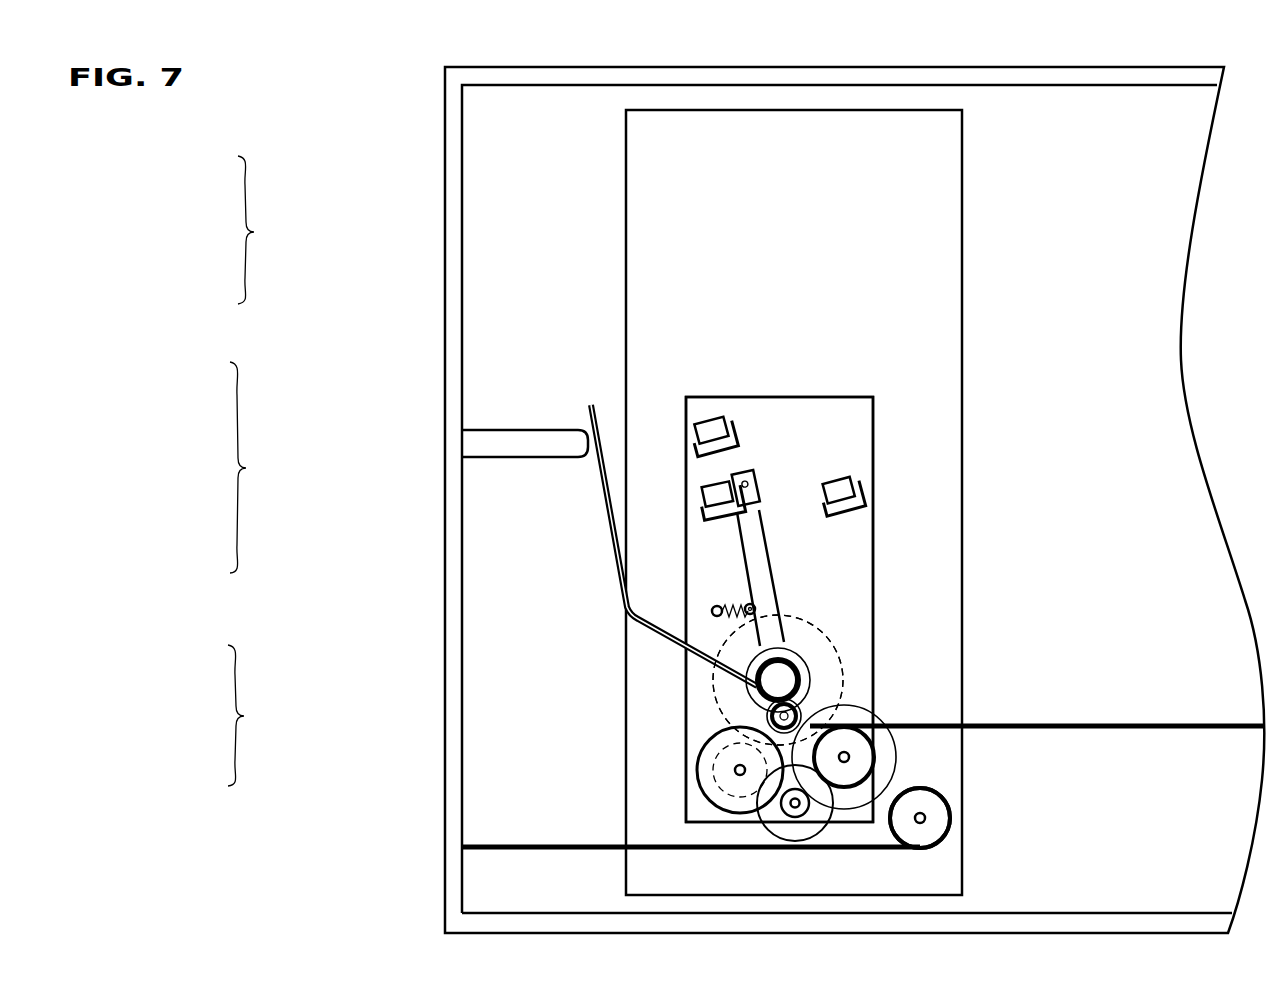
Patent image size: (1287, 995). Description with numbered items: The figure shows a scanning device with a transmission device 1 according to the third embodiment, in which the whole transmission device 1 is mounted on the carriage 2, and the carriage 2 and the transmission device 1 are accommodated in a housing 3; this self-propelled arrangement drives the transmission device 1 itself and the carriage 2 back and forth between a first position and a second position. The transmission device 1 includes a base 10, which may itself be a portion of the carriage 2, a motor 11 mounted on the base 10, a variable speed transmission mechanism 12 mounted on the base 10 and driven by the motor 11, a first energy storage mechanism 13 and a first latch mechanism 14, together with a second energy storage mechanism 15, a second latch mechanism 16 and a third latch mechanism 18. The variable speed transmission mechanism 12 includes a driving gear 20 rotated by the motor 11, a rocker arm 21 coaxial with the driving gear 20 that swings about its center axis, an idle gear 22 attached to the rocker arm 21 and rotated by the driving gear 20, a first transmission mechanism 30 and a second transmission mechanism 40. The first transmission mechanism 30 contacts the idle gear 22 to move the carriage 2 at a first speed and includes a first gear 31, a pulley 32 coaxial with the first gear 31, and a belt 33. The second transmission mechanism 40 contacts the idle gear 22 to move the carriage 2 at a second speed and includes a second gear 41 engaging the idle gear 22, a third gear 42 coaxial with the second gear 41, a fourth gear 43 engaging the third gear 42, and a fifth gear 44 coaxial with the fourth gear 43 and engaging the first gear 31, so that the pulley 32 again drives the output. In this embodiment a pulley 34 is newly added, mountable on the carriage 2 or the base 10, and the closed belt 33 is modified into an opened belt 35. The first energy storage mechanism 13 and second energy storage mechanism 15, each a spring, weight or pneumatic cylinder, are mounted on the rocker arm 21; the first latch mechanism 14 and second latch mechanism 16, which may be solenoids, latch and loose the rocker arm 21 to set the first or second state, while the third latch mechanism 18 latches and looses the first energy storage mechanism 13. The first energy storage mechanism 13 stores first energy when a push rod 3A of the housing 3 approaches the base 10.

The transmission device 1 is at (870, 386).
The carriage 2 is at (626, 272).
The housing 3 is at (455, 277).
The push rod 3A is at (502, 440).
The base 10 is at (875, 554).
The motor 11 is at (712, 688).
The variable speed transmission mechanism 12 is at (243, 234).
The first energy storage mechanism 13 is at (627, 604).
The first latch mechanism 14 is at (698, 472).
The second energy storage mechanism 15 is at (718, 608).
The second latch mechanism 16 is at (856, 490).
The third latch mechanism 18 is at (735, 418).
The driving gear 20 is at (805, 671).
The rocker arm 21 is at (805, 622).
The idle gear 22 is at (830, 700).
The first transmission mechanism 30 is at (233, 715).
The first gear 31 is at (892, 786).
The pulley 32 is at (878, 736).
The belt 33 is at (569, 808).
The pulley 34 is at (950, 822).
The opened belt 35 is at (600, 850).
The second transmission mechanism 40 is at (234, 471).
The second gear 41 is at (703, 825).
The third gear 42 is at (740, 800).
The fourth gear 43 is at (770, 834).
The fifth gear 44 is at (800, 827).